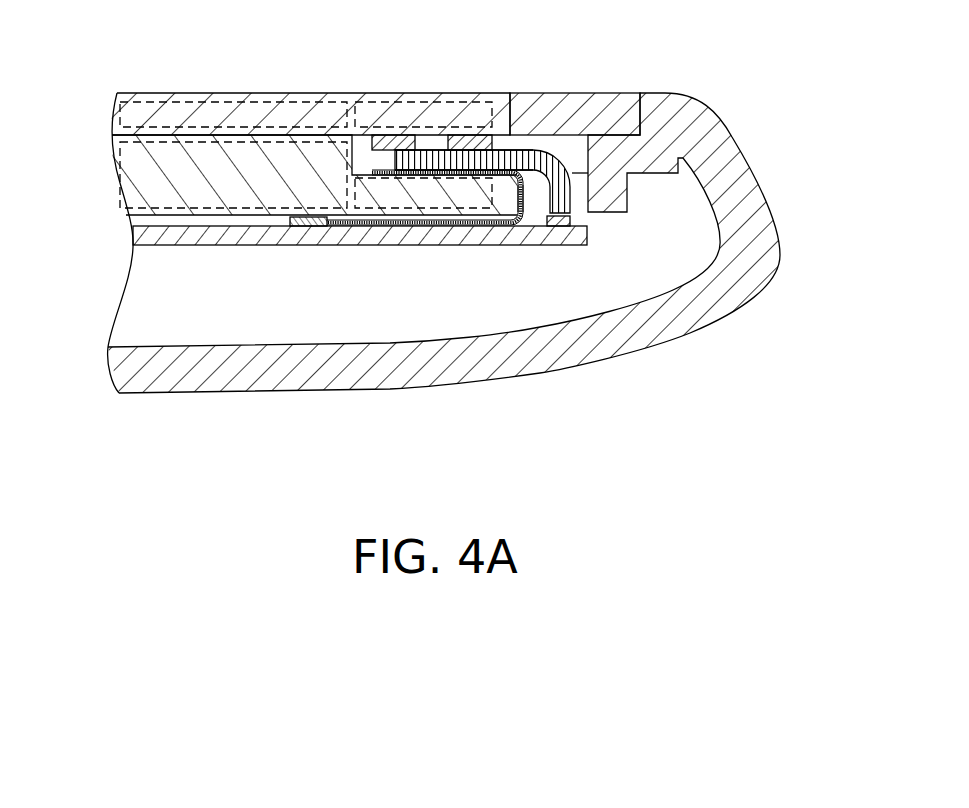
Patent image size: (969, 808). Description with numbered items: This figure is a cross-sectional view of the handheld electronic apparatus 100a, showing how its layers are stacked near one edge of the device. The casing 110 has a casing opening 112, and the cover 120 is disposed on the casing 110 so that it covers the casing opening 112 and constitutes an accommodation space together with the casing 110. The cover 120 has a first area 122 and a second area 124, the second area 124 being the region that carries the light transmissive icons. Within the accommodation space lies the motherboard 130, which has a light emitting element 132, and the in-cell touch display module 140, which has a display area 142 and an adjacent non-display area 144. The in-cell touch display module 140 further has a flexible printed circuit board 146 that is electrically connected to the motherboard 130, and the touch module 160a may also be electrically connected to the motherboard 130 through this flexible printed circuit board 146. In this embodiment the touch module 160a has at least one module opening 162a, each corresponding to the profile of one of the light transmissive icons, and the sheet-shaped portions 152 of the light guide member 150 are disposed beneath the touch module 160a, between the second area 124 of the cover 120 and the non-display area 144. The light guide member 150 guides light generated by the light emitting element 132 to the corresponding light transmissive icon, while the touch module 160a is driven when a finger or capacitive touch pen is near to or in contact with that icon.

The handheld electronic apparatus 100a is at (790, 86).
The casing 110 is at (700, 123).
The casing opening 112 is at (583, 168).
The cover 120 is at (140, 115).
The first area 122 is at (243, 99).
The second area 124 is at (450, 135).
The motherboard 130 is at (140, 235).
The light emitting element 132 is at (558, 226).
The in-cell touch display module 140 is at (140, 180).
The display area 142 is at (208, 208).
The non-display area 144 is at (447, 208).
The flexible printed circuit board 146 is at (525, 208).
The light guide member 150 is at (553, 150).
The sheet-shaped portions 152 is at (507, 160).
The touch module 160a is at (427, 221).
The module opening 162a is at (420, 145).